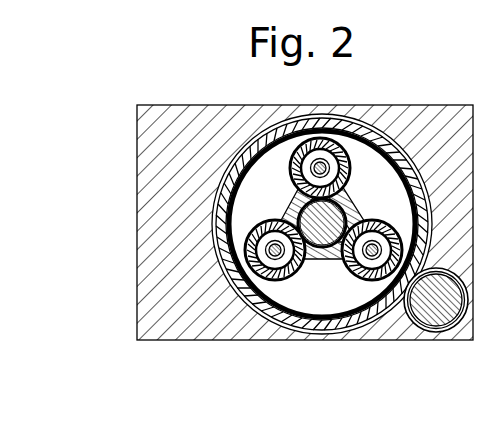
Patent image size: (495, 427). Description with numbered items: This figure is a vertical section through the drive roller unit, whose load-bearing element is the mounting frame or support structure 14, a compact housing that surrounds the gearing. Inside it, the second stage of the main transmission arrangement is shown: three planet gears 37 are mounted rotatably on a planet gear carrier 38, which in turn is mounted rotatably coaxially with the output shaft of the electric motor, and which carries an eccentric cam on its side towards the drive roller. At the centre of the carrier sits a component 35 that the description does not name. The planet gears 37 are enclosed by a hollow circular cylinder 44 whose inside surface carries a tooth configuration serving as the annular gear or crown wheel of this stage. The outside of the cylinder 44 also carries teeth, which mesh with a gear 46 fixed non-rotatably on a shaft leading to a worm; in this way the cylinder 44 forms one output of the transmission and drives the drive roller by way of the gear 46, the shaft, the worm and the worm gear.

The mounting frame or support structure 14 is at (177, 128).
The hollow circular cylinder 44 is at (262, 148).
The planet gear carrier 38 is at (353, 197).
The planet gears 37 is at (338, 142).
The sun gear 35 is at (320, 262).
The gear 46 is at (438, 331).